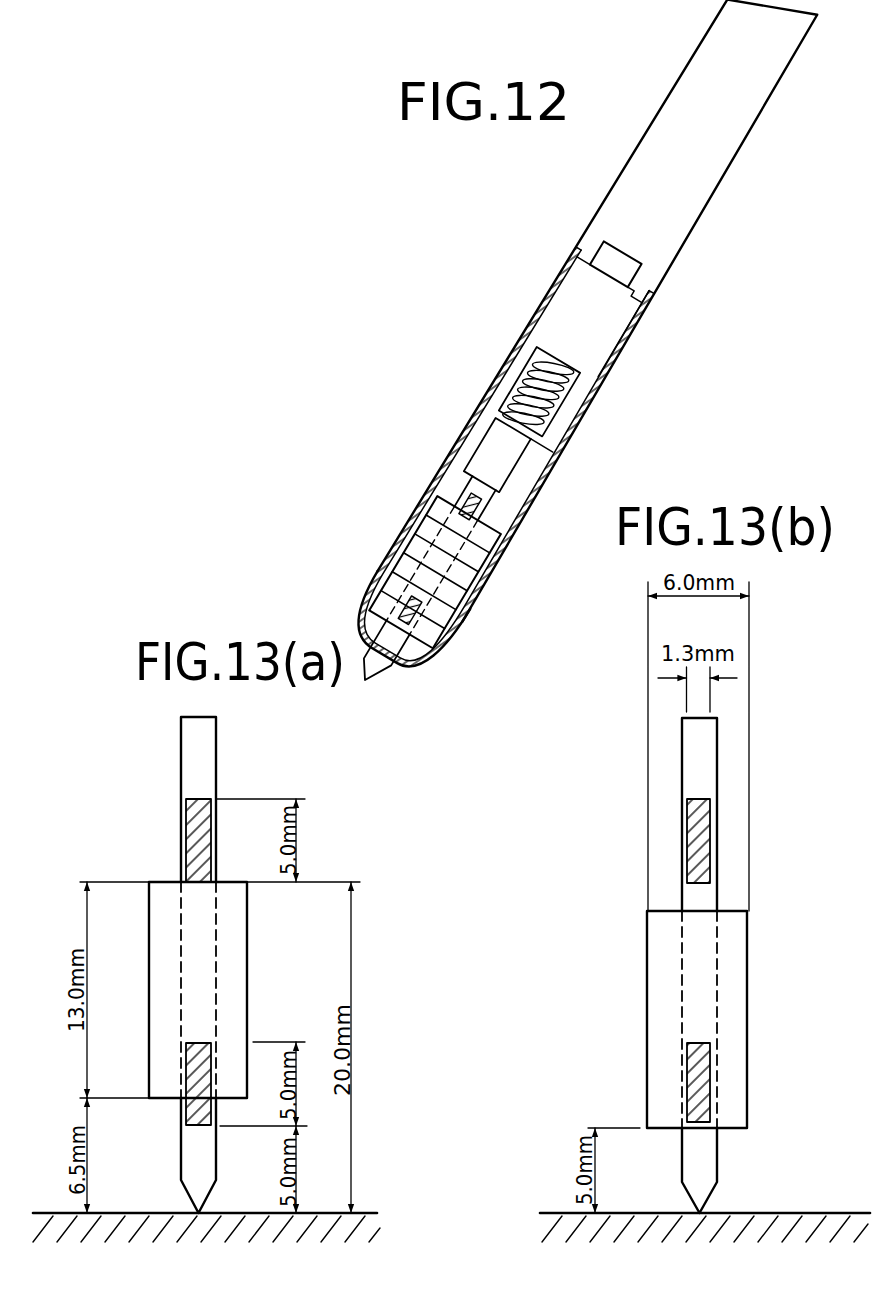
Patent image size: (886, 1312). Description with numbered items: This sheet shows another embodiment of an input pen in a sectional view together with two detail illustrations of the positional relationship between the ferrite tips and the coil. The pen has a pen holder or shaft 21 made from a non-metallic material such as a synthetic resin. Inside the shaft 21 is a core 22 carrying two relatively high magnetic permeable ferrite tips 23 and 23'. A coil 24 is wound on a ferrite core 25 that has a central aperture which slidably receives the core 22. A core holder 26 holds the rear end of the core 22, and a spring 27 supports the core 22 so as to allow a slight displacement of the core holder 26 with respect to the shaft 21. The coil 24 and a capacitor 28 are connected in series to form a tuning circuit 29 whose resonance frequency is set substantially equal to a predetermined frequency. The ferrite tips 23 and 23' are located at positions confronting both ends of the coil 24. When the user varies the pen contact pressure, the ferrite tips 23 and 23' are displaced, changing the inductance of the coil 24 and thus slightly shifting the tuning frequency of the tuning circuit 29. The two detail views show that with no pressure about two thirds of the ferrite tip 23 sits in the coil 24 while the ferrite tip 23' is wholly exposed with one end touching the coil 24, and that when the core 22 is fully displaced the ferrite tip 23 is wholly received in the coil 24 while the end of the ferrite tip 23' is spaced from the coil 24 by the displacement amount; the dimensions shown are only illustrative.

The shaft 21 is at (674, 84).
The core 22 is at (372, 660).
The ferrite tip 23 is at (450, 634).
The ferrite tip 23' is at (522, 514).
The coil 24 is at (440, 555).
The ferrite core 25 is at (397, 547).
The core holder 26 is at (550, 447).
The spring 27 is at (511, 362).
The capacitor 28 is at (632, 242).
The tuning circuit 29 is at (626, 338).